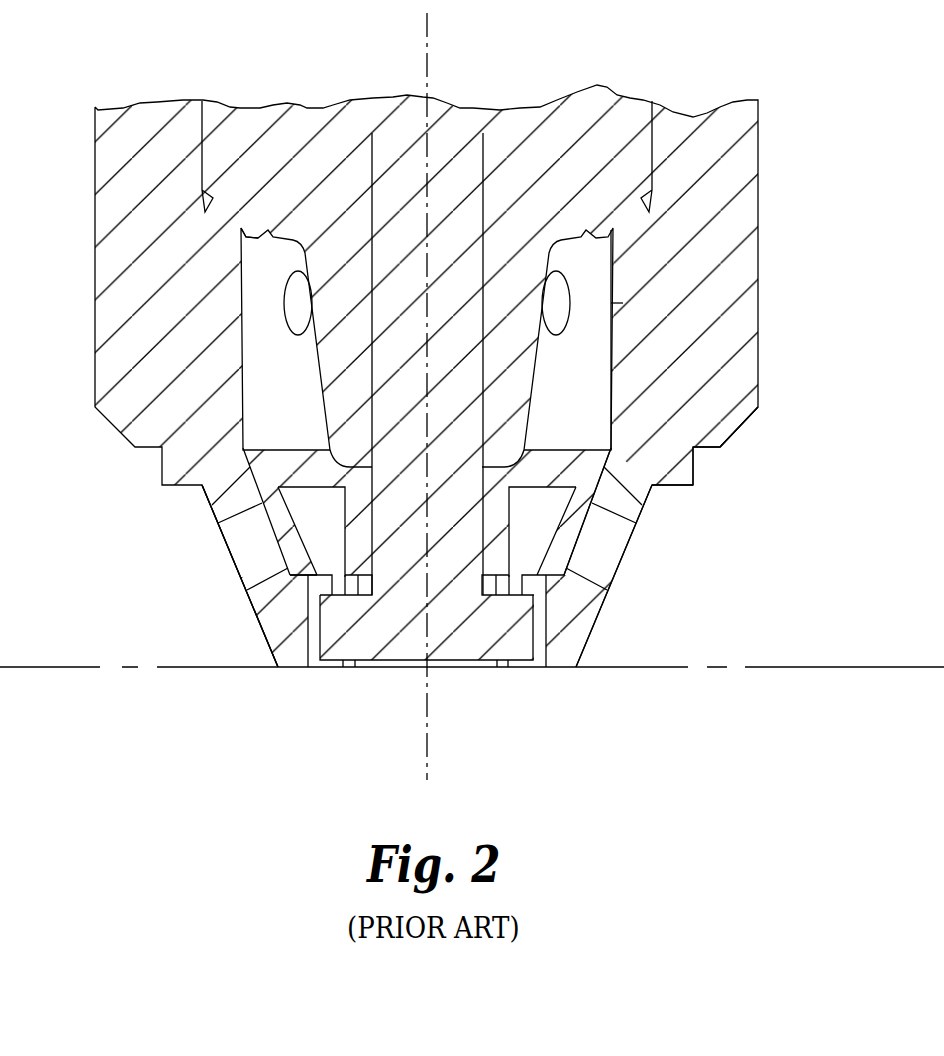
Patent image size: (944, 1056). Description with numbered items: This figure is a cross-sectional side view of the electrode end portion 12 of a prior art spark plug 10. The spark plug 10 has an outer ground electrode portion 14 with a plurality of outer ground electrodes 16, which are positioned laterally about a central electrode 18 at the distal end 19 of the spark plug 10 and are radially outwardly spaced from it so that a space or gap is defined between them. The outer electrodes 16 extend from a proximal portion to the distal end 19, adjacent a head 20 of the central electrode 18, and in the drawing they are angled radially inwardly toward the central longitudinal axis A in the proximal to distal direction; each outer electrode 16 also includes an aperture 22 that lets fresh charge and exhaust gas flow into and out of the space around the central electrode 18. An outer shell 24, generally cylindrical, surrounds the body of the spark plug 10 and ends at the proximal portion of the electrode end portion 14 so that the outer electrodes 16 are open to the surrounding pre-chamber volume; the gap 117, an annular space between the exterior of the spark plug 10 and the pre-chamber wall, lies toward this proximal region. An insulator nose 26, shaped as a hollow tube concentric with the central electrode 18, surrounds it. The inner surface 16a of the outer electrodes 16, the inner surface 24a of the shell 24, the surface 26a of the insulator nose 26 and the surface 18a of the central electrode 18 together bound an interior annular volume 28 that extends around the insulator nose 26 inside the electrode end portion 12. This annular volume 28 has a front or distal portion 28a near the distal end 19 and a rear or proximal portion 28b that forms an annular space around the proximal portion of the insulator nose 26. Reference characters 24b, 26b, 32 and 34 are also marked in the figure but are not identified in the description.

The spark plug 10 is at (472, 414).
The electrode end portion 12 is at (738, 82).
The outer ground electrode portion 14 is at (240, 622).
The outer ground electrodes 16 is at (288, 653).
The inner surface of the outer electrodes 16a is at (603, 432).
The central electrode 18 is at (390, 547).
The surface of the central electrode 18a is at (517, 560).
The distal end 19 is at (447, 672).
The head 20 is at (373, 635).
The aperture 22 is at (605, 540).
The outer shell 24 is at (728, 367).
The inner surface of the shell 24a is at (608, 345).
The chamfer 24b is at (747, 420).
The insulator nose 26 is at (348, 385).
The surface of the insulator nose 26a is at (543, 372).
The insert bottom 26b is at (613, 432).
The interior annular volume 28 is at (297, 470).
The distal portion of the annular volume 28a is at (335, 560).
The proximal portion of the annular volume 28b is at (258, 260).
The insert hole 32 is at (613, 305).
The step 34 is at (720, 447).
The gap 117 is at (698, 613).